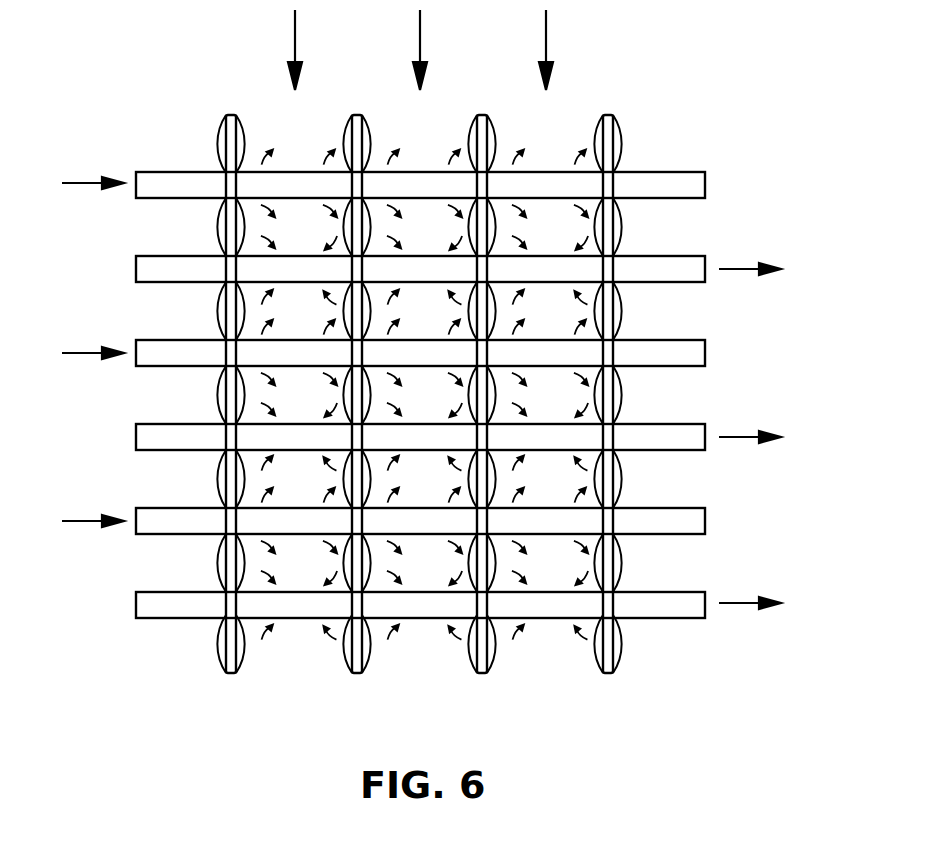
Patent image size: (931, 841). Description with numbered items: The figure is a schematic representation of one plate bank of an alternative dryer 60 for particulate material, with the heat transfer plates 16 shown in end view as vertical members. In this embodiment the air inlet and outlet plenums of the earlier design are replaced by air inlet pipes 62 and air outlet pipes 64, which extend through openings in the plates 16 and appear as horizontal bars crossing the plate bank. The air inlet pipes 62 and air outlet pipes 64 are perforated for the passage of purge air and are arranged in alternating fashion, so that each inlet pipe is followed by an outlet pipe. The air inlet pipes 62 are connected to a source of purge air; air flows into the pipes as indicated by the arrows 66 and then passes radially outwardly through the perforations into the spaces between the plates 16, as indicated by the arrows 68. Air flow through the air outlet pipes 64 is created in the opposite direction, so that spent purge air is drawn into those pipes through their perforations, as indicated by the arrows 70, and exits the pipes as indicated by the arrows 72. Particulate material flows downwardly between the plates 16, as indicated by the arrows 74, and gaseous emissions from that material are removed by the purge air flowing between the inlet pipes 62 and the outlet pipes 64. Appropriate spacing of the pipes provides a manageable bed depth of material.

The plates 16 is at (227, 116).
The alternative dryer 60 is at (694, 122).
The air inlet pipes 62 is at (431, 172).
The air outlet pipes 64 is at (184, 256).
The arrows 66 is at (79, 182).
The arrows 68 is at (263, 168).
The arrows 70 is at (262, 408).
The arrows 72 is at (742, 268).
The arrows 74 is at (295, 23).